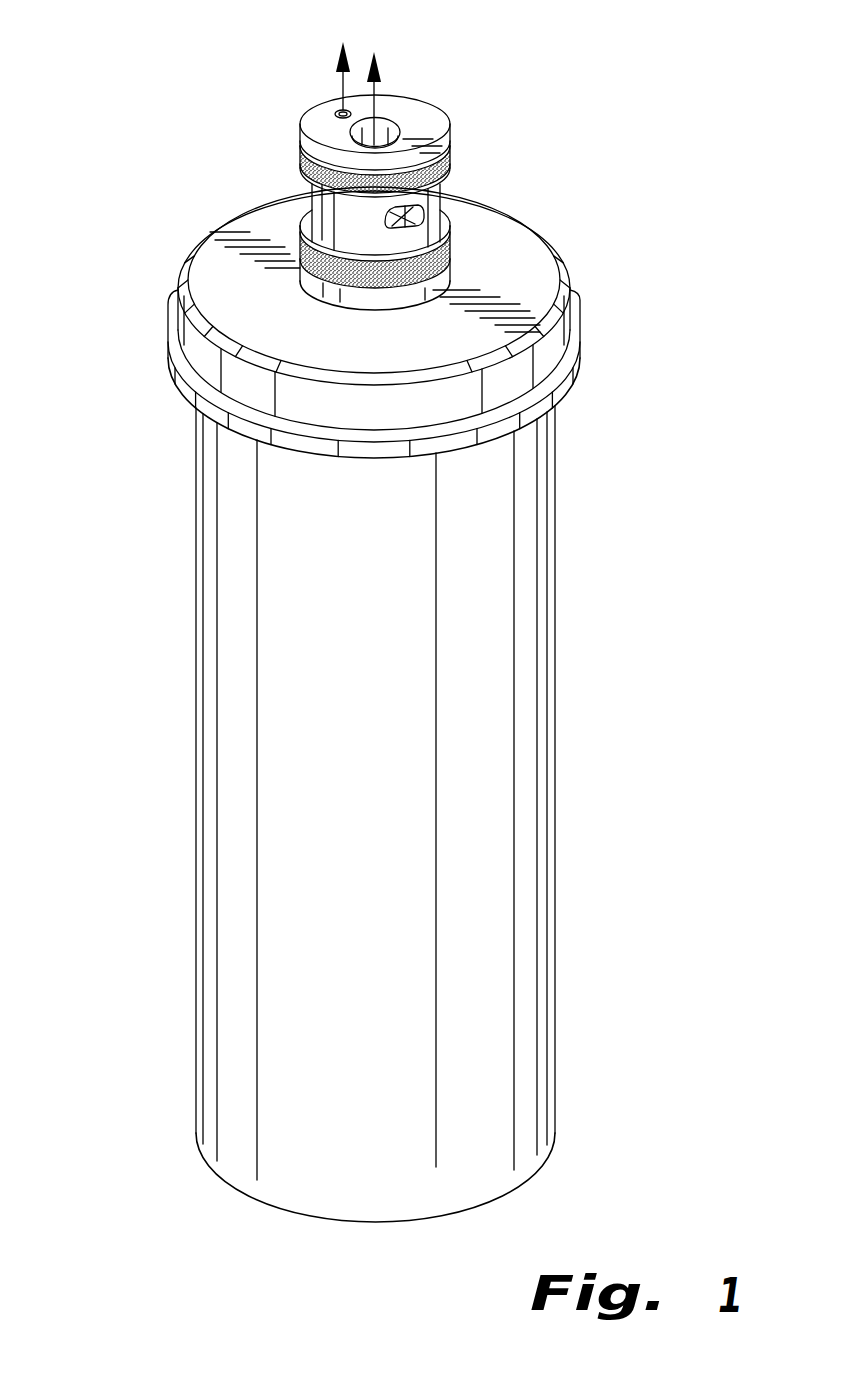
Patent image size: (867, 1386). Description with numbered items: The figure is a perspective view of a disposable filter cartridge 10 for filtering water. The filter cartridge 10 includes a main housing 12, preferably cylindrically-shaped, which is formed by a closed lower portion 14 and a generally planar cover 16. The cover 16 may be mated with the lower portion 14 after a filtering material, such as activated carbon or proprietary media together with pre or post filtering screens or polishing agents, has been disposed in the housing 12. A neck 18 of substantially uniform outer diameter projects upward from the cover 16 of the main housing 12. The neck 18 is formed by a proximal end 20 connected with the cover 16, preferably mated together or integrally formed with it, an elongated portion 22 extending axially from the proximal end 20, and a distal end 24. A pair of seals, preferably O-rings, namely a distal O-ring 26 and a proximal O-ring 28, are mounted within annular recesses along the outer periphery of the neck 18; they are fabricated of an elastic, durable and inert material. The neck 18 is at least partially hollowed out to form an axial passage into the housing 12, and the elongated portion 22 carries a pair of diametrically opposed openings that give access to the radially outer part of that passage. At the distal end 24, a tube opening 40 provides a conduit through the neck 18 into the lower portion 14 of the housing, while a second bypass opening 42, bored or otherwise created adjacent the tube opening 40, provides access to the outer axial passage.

The filter cartridge 10 is at (130, 166).
The main housing 12 is at (198, 818).
The closed lower portion 14 is at (585, 725).
The cover 16 is at (586, 274).
The neck 18 is at (504, 117).
The proximal end 20 is at (380, 315).
The elongated portion 22 is at (292, 210).
The distal end 24 is at (308, 122).
The distal O-ring 26 is at (448, 160).
The proximal O-ring 28 is at (445, 250).
The tube opening 40 is at (387, 118).
The bypass opening 42 is at (342, 107).